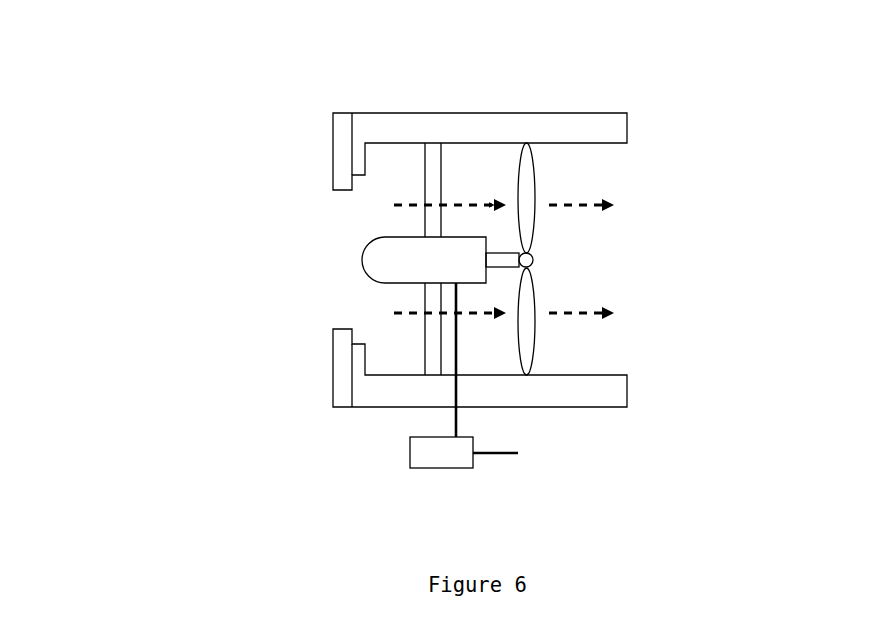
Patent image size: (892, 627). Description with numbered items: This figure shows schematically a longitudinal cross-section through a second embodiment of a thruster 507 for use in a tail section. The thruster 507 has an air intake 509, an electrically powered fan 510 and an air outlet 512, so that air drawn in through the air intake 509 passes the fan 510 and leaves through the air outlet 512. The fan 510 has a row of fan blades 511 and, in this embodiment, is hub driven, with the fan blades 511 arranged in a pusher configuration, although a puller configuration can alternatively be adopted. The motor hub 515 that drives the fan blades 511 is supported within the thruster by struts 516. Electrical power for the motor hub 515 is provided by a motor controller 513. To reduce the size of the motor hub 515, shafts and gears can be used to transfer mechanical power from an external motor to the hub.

The thruster 507 is at (232, 131).
The air intake 509 is at (338, 288).
The electrically powered fan 510 is at (394, 336).
The fan blades 511 is at (523, 184).
The air outlet 512 is at (610, 267).
The motor controller 513 is at (429, 471).
The motor hub 515 is at (385, 257).
The struts 516 is at (433, 355).